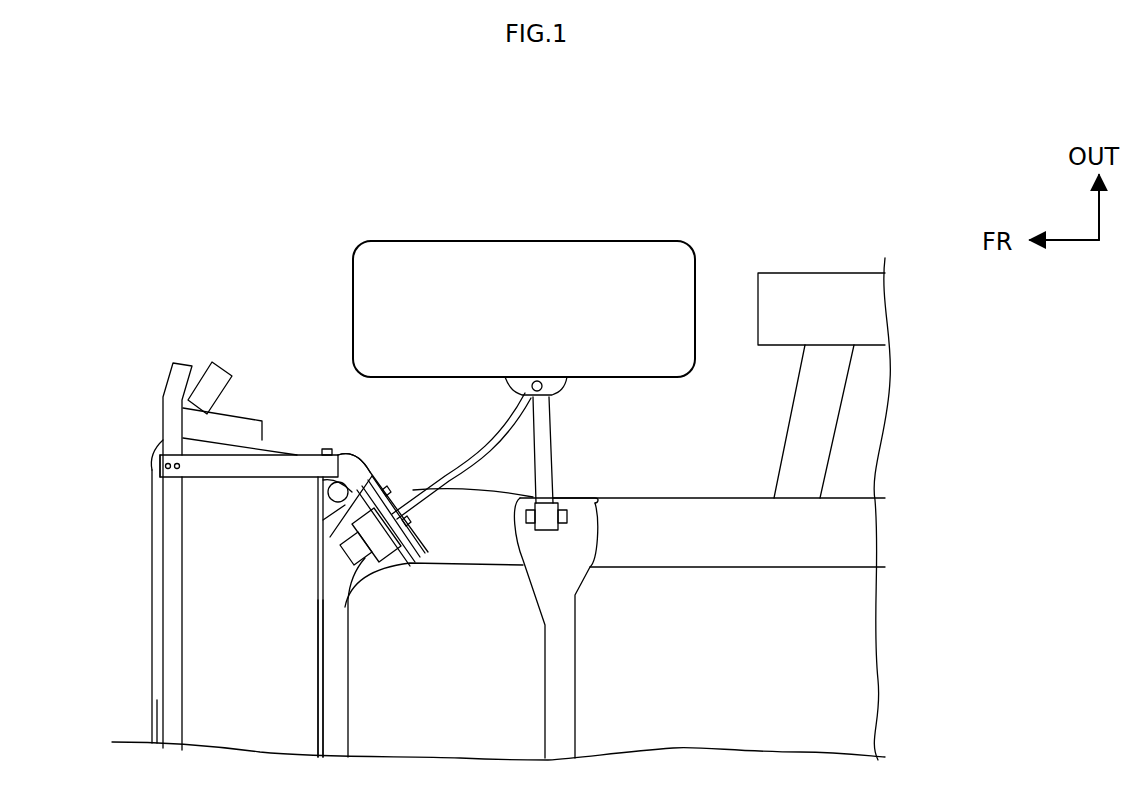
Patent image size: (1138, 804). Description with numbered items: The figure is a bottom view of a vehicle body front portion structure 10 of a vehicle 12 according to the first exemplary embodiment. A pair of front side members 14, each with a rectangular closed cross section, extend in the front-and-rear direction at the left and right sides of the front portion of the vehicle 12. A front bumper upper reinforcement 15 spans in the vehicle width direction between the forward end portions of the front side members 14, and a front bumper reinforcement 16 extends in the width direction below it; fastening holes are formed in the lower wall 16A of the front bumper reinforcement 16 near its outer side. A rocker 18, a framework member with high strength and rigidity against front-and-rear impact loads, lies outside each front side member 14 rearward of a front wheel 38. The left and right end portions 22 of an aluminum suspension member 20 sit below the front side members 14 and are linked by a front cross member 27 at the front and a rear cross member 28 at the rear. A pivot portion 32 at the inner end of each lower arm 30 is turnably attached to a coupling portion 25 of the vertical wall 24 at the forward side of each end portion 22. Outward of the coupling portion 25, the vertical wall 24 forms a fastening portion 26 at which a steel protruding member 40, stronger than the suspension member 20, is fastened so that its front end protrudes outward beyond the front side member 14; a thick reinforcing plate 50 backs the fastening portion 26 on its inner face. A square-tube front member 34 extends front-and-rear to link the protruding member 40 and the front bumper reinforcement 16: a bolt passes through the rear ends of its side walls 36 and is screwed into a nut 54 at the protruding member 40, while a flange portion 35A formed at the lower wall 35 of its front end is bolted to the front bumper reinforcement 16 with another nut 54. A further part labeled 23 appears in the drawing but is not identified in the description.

The vehicle body front portion structure 10 is at (318, 423).
The vehicle 12 is at (148, 400).
The front side member 14 is at (648, 495).
The front bumper upper reinforcement 15 is at (148, 658).
The front bumper reinforcement 16 is at (157, 606).
The lower wall 16A is at (172, 716).
The rocker 18 is at (808, 290).
The suspension member 20 is at (314, 720).
The end portion 22 is at (455, 553).
The bracket block 23 is at (397, 553).
The vertical wall 24 is at (330, 508).
The coupling portion 25 is at (322, 525).
The fastening portion 26 is at (368, 478).
The front cross member 27 is at (335, 735).
The rear cross member 28 is at (563, 686).
The lower arm 30 is at (462, 448).
The pivot portion 32 is at (362, 575).
The front member 34 is at (200, 484).
The lower wall 35 is at (210, 463).
The flange portion 35A is at (170, 478).
The side wall 36 is at (283, 452).
The front wheel 38 is at (537, 253).
The protruding member 40 is at (372, 473).
The reinforcing plate 50 is at (398, 488).
The nut 54 is at (163, 452).